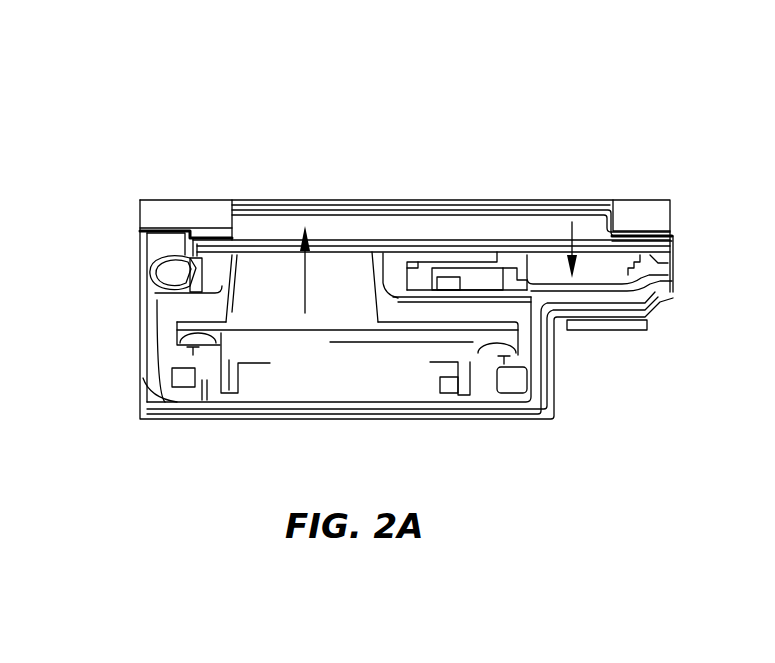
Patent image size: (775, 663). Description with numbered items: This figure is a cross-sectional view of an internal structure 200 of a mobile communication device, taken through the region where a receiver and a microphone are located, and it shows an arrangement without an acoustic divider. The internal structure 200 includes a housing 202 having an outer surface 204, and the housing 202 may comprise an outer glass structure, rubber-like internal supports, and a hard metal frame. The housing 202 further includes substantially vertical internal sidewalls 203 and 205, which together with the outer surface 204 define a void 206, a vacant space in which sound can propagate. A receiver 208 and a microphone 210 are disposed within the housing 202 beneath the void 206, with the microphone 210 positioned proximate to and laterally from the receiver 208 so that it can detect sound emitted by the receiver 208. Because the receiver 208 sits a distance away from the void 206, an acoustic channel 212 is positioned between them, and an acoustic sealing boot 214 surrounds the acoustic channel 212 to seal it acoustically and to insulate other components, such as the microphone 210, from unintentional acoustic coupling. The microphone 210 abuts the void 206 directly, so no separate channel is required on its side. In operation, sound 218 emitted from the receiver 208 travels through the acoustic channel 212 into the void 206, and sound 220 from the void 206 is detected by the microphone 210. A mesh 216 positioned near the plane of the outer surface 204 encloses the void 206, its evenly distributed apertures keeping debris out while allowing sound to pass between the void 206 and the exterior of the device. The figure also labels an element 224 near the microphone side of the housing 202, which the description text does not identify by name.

The internal structure 200 is at (168, 120).
The housing 202 is at (162, 212).
The internal sidewall 203 is at (214, 218).
The outer surface 204 is at (650, 200).
The internal sidewall 205 is at (620, 220).
The void 206 is at (418, 208).
The receiver 208 is at (294, 357).
The microphone 210 is at (607, 300).
The acoustic channel 212 is at (334, 300).
The acoustic sealing boot 214 is at (213, 262).
The mesh 216 is at (537, 315).
The sound 218 is at (302, 284).
The sound 220 is at (575, 237).
The flexure 224 is at (549, 325).